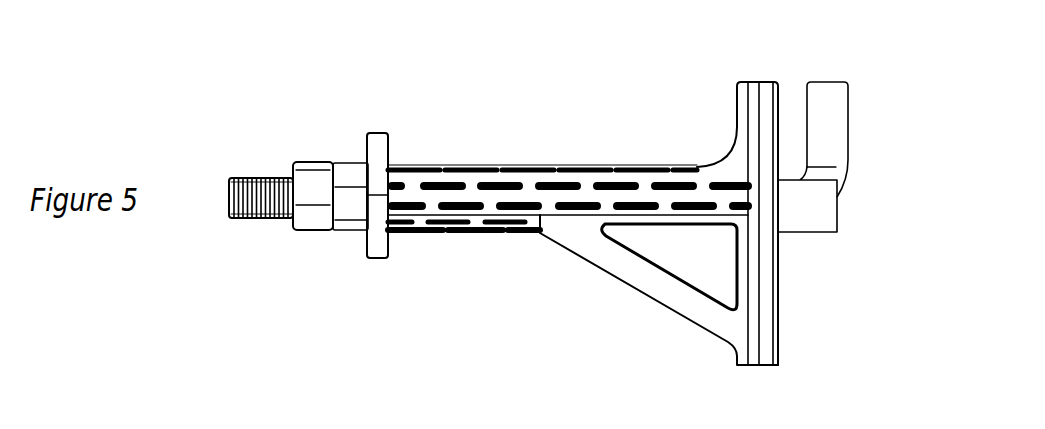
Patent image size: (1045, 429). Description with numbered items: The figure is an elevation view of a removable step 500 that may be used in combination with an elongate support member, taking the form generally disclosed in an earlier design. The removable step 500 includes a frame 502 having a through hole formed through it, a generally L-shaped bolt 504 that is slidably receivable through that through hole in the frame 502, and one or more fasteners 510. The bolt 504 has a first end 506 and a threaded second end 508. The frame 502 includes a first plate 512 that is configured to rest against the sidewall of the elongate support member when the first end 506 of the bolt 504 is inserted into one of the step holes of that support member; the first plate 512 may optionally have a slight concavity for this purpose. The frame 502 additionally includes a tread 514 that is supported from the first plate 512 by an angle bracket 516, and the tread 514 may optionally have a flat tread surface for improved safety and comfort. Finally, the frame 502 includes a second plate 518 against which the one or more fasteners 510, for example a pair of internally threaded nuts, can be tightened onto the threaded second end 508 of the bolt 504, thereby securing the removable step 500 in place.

The removable step 500 is at (882, 102).
The frame 502 is at (772, 77).
The bolt 504 is at (821, 130).
The first end 506 is at (825, 81).
The threaded second end 508 is at (265, 178).
The fasteners 510 is at (362, 153).
The first plate 512 is at (772, 295).
The tread 514 is at (485, 209).
The angle bracket 516 is at (608, 255).
The second plate 518 is at (380, 242).